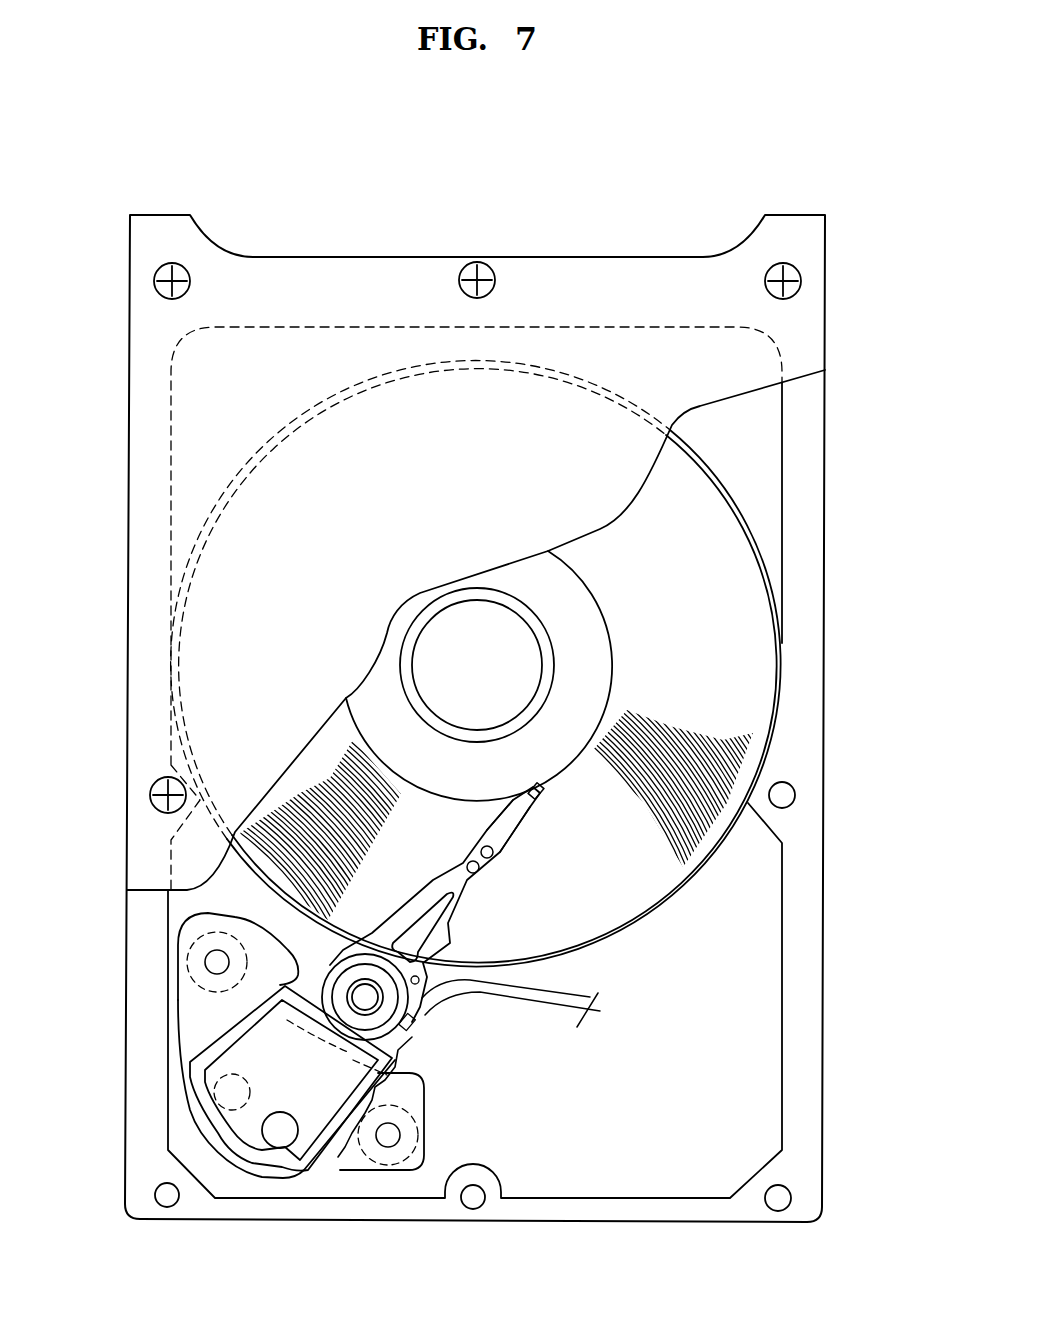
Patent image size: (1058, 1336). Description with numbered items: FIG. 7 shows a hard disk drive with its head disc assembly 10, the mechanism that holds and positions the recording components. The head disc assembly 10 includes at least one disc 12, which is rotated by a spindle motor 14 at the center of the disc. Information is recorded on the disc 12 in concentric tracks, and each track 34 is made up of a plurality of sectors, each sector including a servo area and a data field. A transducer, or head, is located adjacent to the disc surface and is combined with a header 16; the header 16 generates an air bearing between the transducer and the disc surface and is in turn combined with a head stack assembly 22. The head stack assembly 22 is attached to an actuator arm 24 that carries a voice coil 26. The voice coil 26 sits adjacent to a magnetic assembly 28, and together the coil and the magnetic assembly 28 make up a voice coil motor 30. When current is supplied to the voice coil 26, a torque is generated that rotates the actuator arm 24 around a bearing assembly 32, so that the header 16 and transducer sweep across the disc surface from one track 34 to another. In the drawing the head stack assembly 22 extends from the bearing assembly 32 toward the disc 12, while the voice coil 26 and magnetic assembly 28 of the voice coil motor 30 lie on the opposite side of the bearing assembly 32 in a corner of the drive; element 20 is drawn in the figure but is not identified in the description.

The head disc assembly 10 is at (628, 168).
The disc 12 is at (740, 597).
The spindle motor 14 is at (453, 640).
The header 16 is at (540, 792).
The suspension 20 is at (522, 812).
The head stack assembly 22 is at (486, 905).
The actuator arm 24 is at (273, 1013).
The voice coil 26 is at (200, 1082).
The magnetic assembly 28 is at (217, 1027).
The voice coil motor 30 is at (333, 1152).
The bearing assembly 32 is at (375, 1003).
The track 34 is at (330, 790).